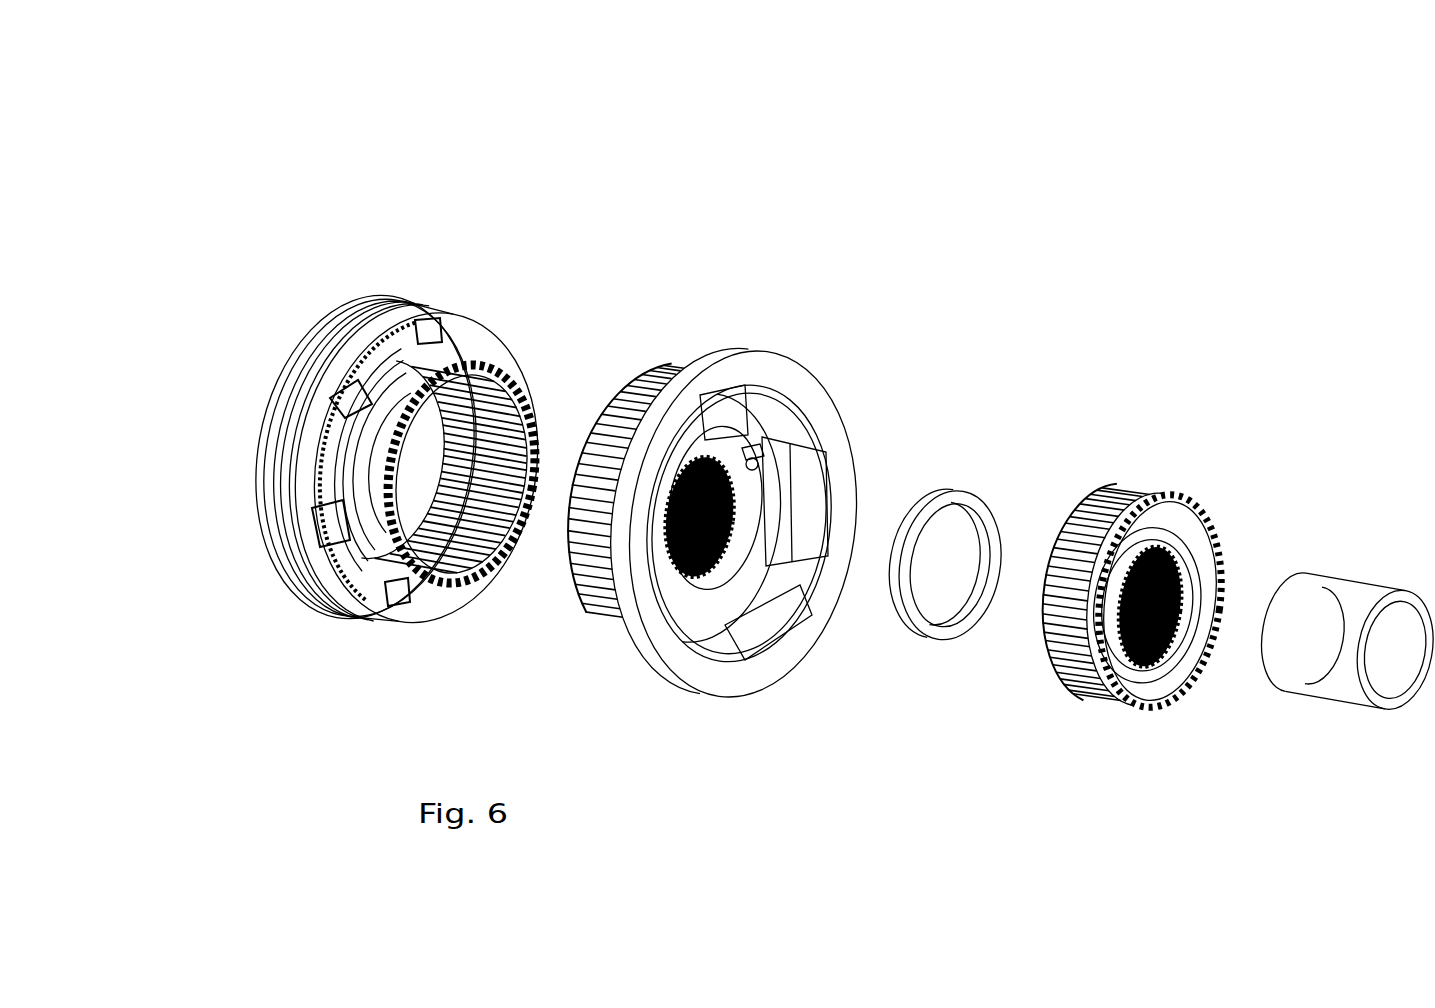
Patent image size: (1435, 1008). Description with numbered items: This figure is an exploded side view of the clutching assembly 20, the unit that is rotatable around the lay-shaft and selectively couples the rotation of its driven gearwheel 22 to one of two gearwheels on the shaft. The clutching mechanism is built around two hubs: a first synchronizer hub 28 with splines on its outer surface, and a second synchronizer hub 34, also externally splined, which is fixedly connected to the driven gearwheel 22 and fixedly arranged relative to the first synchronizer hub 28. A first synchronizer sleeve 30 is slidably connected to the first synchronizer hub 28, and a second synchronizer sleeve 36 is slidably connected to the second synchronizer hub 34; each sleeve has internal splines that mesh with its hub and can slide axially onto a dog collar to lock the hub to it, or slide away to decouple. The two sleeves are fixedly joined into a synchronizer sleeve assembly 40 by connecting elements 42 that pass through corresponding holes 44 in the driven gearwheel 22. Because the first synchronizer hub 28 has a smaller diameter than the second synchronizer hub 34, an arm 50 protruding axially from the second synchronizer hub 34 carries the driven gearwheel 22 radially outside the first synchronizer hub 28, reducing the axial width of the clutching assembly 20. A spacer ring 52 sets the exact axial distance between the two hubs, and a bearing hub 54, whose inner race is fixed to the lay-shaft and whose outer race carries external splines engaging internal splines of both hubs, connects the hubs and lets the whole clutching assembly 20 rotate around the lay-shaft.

The clutching assembly 20 is at (1253, 224).
The driven gearwheel 22 is at (730, 373).
The first synchronizer hub 28 is at (1138, 490).
The first synchronizer sleeve 30 is at (425, 600).
The second synchronizer hub 34 is at (615, 405).
The second synchronizer sleeve 36 is at (290, 545).
The synchronizer sleeve assembly 40 is at (316, 268).
The connecting elements 42 is at (325, 527).
The holes 44 is at (760, 458).
The arm 50 is at (790, 513).
The spacer ring 52 is at (960, 502).
The bearing hub 54 is at (1330, 608).